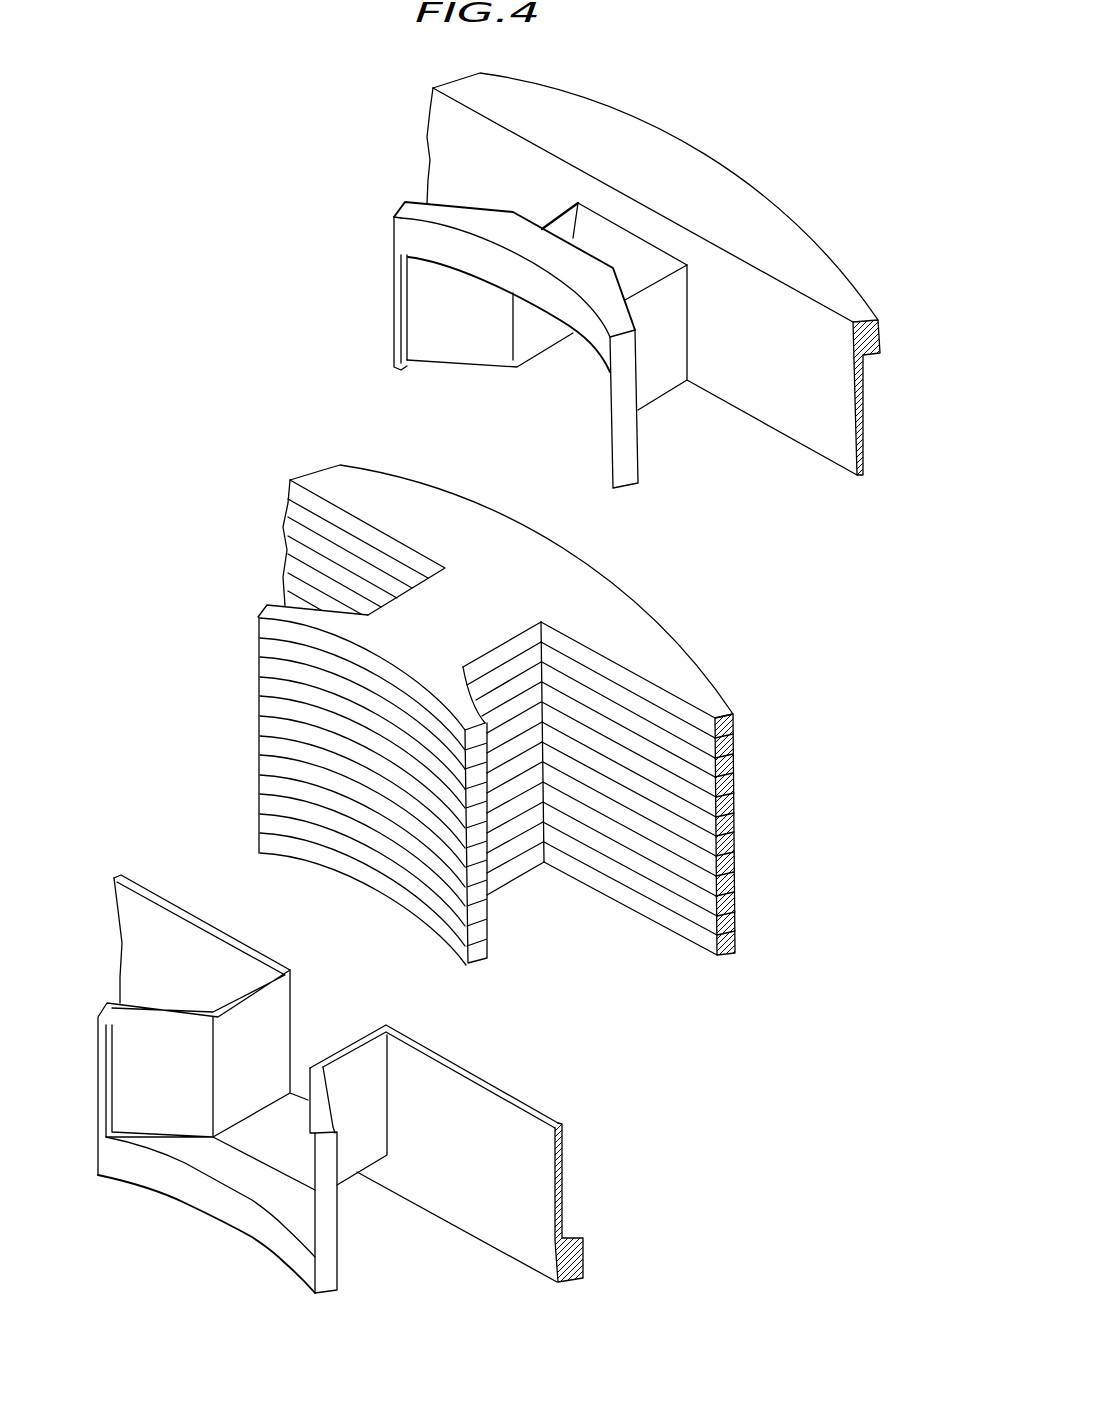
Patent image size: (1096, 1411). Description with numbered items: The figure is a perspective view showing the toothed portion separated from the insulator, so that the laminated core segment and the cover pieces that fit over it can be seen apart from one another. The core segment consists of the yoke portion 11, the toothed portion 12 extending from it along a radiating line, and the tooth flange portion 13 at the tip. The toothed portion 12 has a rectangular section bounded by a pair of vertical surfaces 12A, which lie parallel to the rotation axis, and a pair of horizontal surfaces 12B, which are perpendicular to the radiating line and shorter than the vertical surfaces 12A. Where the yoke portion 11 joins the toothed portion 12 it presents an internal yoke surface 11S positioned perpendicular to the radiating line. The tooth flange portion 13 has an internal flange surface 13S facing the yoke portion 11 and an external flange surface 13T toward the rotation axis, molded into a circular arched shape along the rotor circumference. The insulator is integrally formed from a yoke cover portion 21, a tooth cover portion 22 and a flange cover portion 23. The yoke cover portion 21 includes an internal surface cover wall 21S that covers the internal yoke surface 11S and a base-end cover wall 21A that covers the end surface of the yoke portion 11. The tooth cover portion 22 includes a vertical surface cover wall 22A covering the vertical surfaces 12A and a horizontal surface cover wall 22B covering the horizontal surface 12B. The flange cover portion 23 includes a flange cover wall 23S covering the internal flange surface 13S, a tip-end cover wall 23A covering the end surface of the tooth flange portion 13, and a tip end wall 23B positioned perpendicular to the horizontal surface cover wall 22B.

The yoke portion 11 is at (633, 625).
The internal yoke surface 11S is at (674, 865).
The toothed portion 12 is at (418, 612).
The vertical surface 12A is at (524, 677).
The horizontal surface 12B is at (477, 601).
The tooth flange portion 13 is at (317, 715).
The internal flange surface 13S is at (316, 595).
The external flange surface 13T is at (373, 826).
The yoke cover portion 21 is at (595, 679).
The base-end cover wall 21A is at (738, 197).
The internal surface cover wall 21S is at (780, 388).
The tooth cover portion 22 is at (572, 694).
The vertical surface cover wall 22A is at (668, 316).
The horizontal surface cover wall 22B is at (637, 270).
The flange cover portion 23 is at (410, 690).
The tip-end cover wall 23A is at (579, 268).
The tip end wall 23B is at (579, 224).
The flange cover wall 23S is at (474, 145).